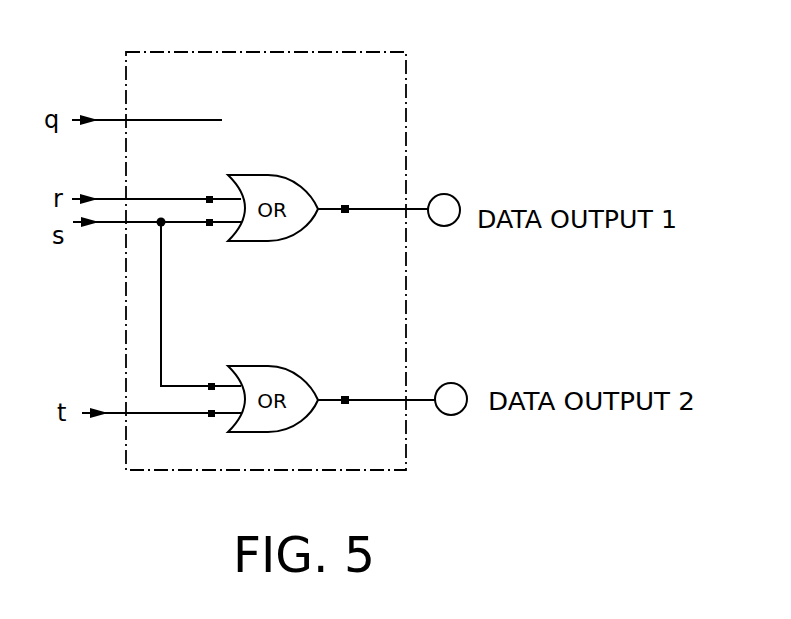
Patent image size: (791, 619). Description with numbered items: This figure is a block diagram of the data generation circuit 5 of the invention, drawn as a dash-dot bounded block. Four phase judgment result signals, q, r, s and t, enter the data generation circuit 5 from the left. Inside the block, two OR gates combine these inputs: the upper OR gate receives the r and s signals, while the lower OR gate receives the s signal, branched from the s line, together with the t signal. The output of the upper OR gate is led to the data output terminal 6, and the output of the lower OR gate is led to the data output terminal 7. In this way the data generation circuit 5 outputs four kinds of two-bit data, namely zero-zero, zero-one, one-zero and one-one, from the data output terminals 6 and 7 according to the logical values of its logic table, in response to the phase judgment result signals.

The data generation circuit 5 is at (308, 52).
The data output terminal 6 is at (444, 194).
The data output terminal 7 is at (450, 383).